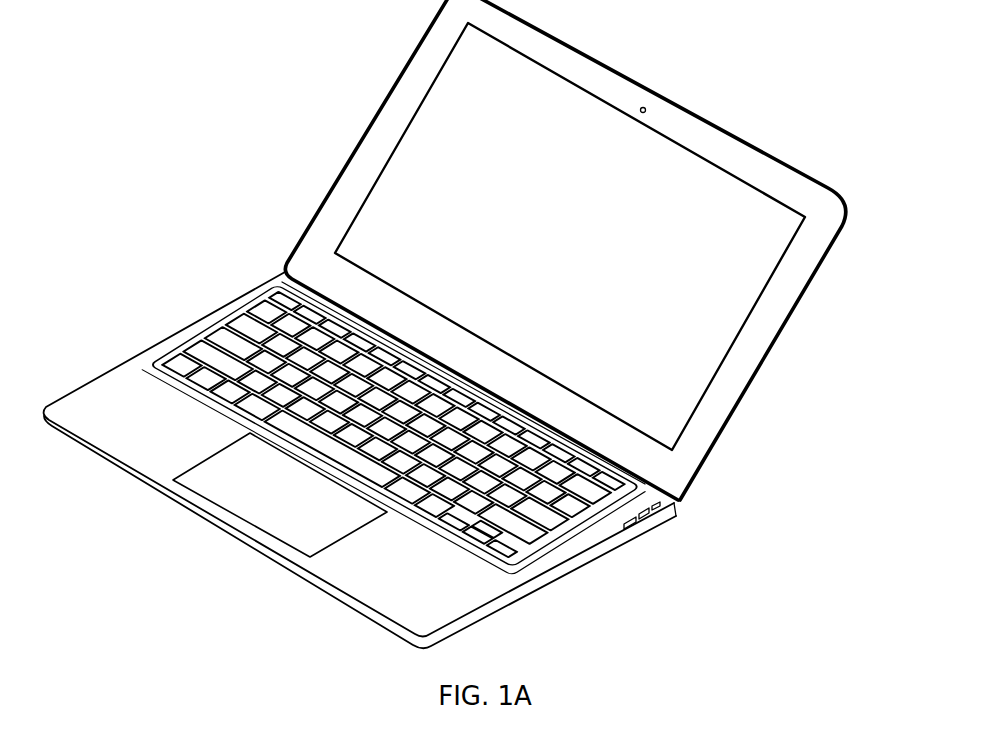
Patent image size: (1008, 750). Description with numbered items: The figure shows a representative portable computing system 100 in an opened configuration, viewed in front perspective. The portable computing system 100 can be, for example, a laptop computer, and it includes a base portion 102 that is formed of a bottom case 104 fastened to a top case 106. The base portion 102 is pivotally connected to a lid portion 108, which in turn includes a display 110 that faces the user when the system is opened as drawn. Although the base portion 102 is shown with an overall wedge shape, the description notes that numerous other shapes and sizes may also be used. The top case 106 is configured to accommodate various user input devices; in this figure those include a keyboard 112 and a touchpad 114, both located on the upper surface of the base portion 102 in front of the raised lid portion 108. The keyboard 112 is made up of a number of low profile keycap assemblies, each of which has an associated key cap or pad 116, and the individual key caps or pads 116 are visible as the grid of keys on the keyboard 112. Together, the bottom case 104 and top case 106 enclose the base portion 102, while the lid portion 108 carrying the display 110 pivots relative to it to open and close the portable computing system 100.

The portable computing system 100 is at (195, 100).
The base portion 102 is at (623, 535).
The bottom case 104 is at (517, 595).
The top case 106 is at (389, 579).
The lid portion 108 is at (753, 327).
The display 110 is at (551, 247).
The keyboard 112 is at (256, 258).
The touchpad 114 is at (264, 506).
The key cap or pad 116 is at (230, 330).